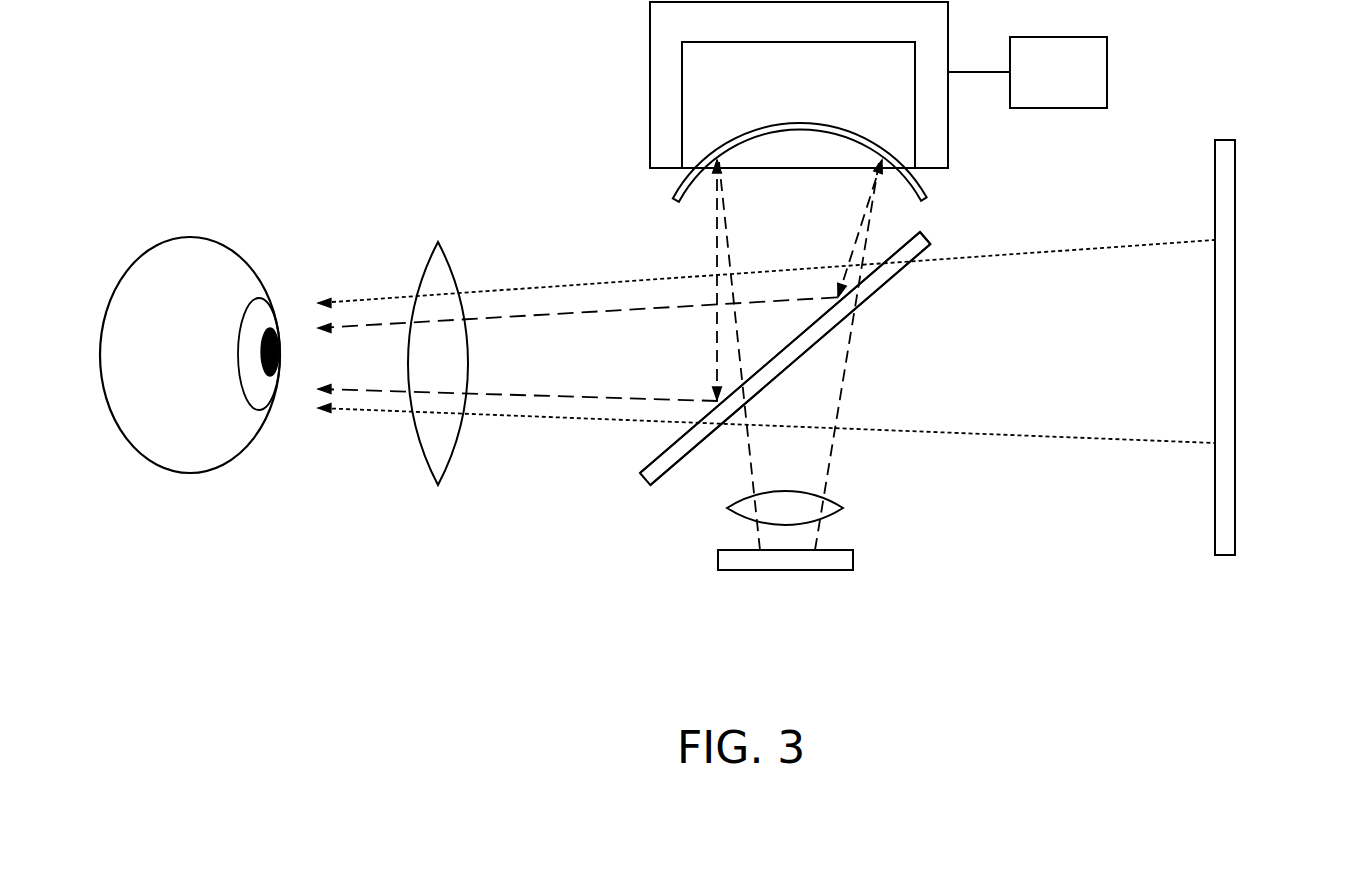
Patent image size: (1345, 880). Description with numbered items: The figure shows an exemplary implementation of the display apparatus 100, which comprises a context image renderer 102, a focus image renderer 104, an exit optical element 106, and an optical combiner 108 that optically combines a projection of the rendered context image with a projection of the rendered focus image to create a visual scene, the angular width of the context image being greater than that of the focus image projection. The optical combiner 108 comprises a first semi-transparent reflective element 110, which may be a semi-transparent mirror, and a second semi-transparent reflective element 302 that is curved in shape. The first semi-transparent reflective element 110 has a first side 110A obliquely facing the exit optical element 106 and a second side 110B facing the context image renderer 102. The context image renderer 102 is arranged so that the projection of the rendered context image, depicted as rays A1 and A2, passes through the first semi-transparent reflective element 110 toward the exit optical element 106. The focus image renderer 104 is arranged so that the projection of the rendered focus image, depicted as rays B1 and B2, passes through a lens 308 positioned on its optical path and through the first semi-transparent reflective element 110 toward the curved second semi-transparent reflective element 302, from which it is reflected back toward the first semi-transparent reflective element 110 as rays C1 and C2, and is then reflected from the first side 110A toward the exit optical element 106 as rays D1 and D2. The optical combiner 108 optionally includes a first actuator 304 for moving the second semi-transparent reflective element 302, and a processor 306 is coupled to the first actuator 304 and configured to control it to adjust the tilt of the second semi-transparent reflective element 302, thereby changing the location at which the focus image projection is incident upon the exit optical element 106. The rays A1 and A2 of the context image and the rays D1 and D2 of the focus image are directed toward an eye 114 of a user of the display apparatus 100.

The display apparatus 100 is at (1160, 60).
The context image renderer 102 is at (1264, 339).
The focus image renderer 104 is at (835, 546).
The exit optical element 106 is at (461, 336).
The optical combiner 108 is at (983, 202).
The first semi-transparent reflective element 110 is at (741, 384).
The first side 110A is at (746, 352).
The second side 110B is at (790, 391).
The eye 114 is at (190, 396).
The second semi-transparent reflective element 302 is at (753, 172).
The first actuator 304 is at (757, 85).
The processor 306 is at (1077, 85).
The lens 308 is at (822, 505).
The ray A1 is at (766, 250).
The ray A2 is at (766, 453).
The ray B1 is at (851, 356).
The ray B2 is at (726, 356).
The ray C1 is at (841, 228).
The ray C2 is at (680, 280).
The ray D1 is at (580, 331).
The ray D2 is at (518, 376).